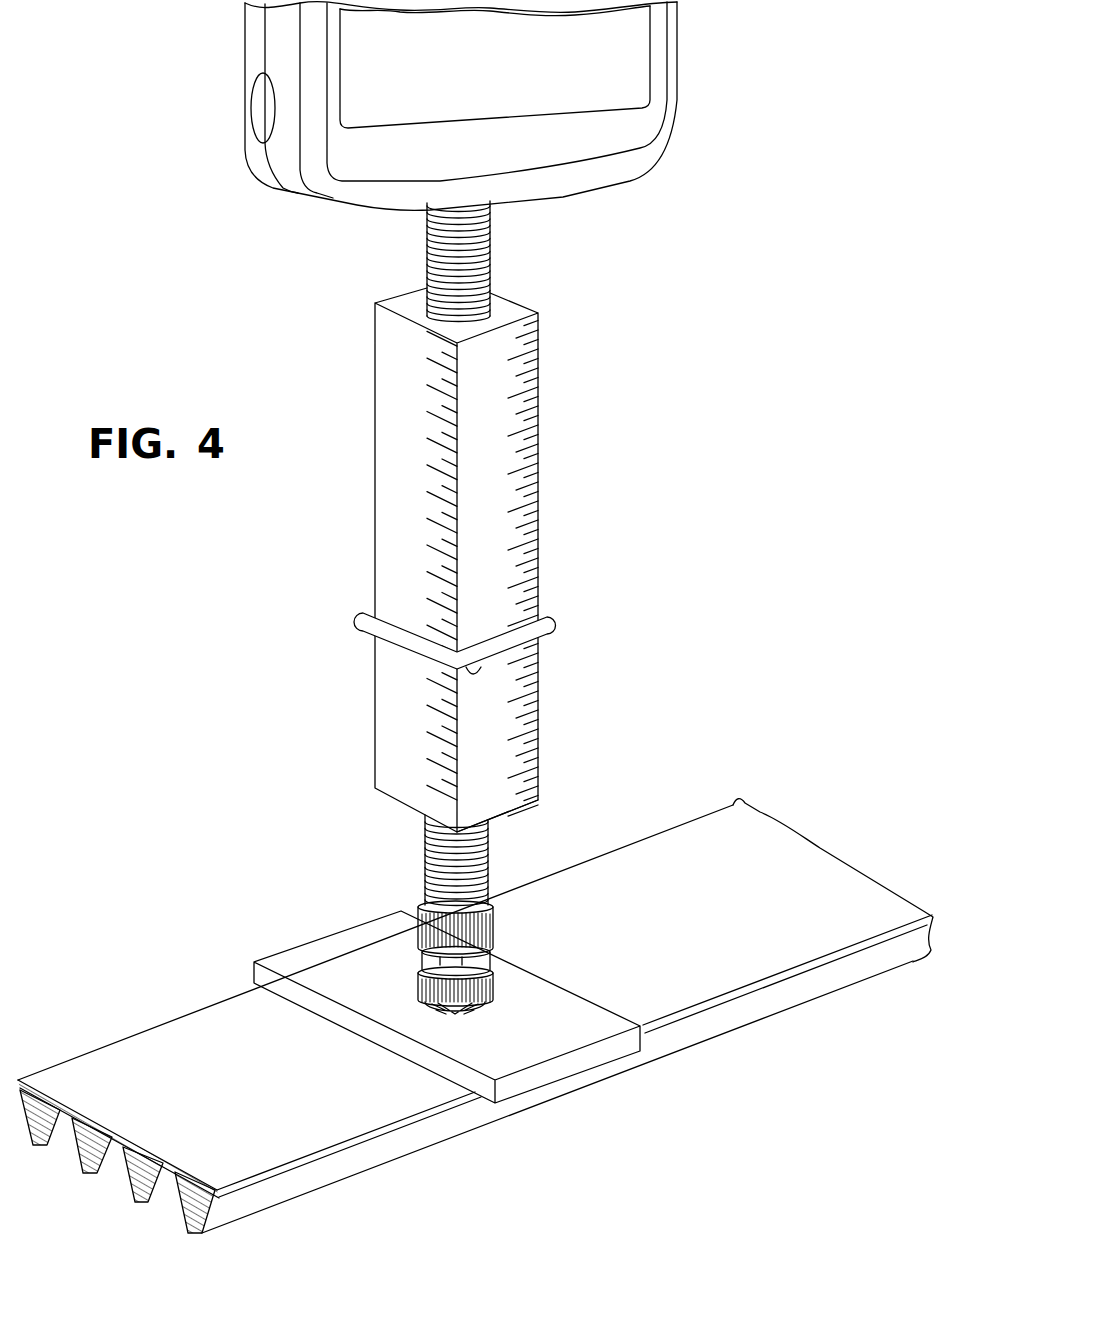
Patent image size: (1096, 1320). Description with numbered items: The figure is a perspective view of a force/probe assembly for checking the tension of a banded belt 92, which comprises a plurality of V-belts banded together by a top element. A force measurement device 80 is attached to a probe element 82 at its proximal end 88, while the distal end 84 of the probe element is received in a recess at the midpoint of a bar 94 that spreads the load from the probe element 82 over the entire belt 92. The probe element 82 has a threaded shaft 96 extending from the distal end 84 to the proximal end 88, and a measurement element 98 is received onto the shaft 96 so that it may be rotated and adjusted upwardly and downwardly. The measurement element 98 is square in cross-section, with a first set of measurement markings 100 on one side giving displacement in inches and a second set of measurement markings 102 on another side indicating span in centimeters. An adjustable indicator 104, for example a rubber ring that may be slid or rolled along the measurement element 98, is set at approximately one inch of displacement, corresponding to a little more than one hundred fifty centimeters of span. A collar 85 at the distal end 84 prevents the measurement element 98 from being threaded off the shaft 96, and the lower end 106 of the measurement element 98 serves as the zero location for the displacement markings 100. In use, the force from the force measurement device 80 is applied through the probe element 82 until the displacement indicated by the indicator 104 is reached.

The force measurement device 80 is at (678, 104).
The probe element 82 is at (482, 550).
The distal end 84 is at (421, 943).
The collar 85 is at (489, 912).
The proximal end 88 is at (490, 238).
The belt 92 is at (684, 818).
The bar 94 is at (550, 1040).
The threaded shaft 96 is at (490, 282).
The measurement element 98 is at (539, 557).
The first set of measurement markings 100 is at (525, 720).
The second set of measurement markings 102 is at (437, 600).
The adjustable indicator 104 is at (548, 626).
The lower end 106 is at (542, 803).